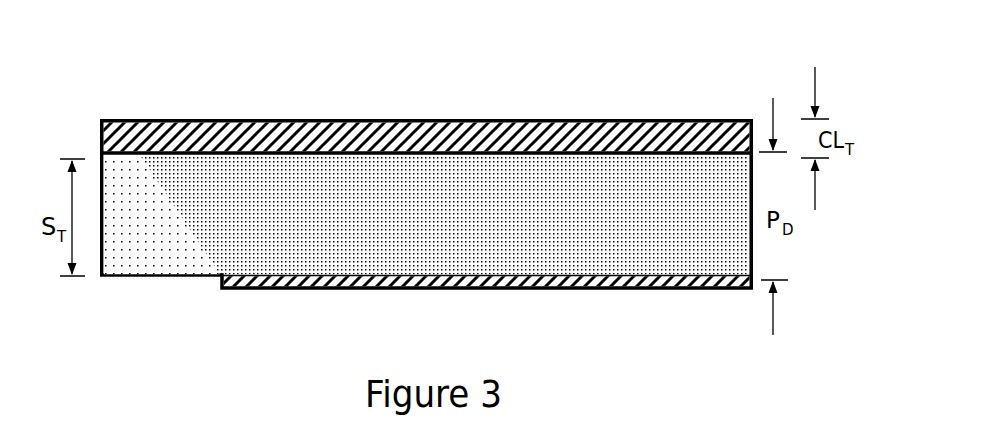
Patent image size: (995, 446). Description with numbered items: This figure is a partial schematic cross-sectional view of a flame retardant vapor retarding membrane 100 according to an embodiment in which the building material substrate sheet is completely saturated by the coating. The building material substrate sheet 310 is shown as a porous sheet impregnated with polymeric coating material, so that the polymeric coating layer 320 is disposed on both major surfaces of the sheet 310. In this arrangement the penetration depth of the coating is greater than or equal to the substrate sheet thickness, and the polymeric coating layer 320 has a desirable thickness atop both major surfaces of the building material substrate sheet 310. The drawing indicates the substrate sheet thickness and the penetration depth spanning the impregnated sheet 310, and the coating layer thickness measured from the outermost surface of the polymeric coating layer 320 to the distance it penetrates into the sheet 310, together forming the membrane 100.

The membrane 100 is at (100, 80).
The building material substrate sheet 310 is at (148, 240).
The polymeric coating layer 320 is at (257, 119).